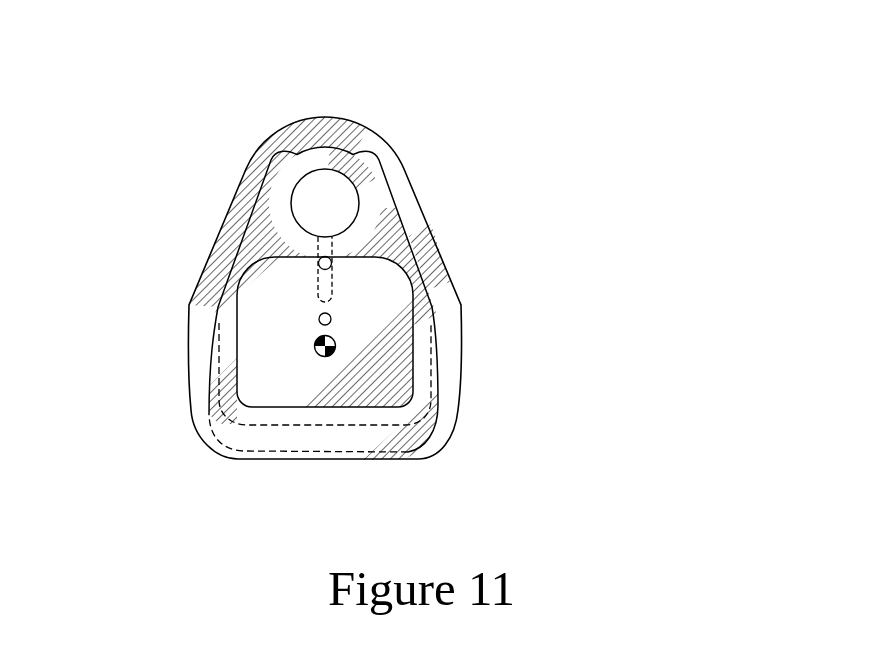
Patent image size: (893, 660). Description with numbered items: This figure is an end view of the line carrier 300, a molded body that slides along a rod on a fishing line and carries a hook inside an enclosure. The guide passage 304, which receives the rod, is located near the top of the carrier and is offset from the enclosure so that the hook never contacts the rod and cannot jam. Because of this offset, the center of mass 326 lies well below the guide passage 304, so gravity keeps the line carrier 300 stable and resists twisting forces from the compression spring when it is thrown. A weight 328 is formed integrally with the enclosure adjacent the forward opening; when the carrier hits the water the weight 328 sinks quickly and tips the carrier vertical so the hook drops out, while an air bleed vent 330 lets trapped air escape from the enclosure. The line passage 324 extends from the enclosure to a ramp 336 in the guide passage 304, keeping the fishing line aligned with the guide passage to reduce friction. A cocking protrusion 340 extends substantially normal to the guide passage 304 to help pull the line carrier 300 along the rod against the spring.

The line carrier 300 is at (153, 227).
The guide passage 304 is at (337, 182).
The line passage 324 is at (319, 266).
The center of mass 326 is at (320, 355).
The weight 328 is at (420, 459).
The air bleed vent 330 is at (331, 320).
The ramp 336 is at (333, 292).
The cocking protrusion 340 is at (450, 310).